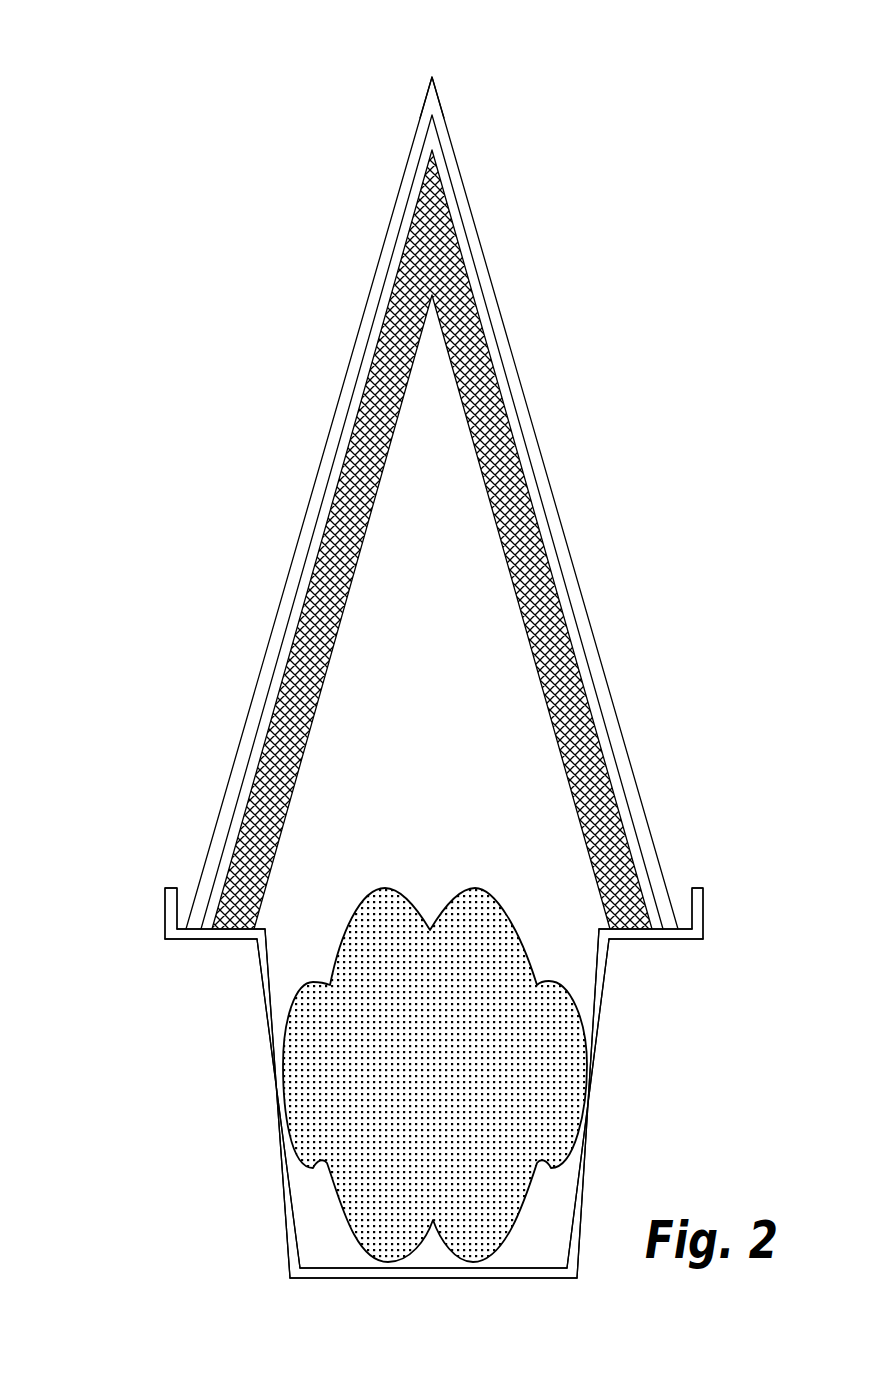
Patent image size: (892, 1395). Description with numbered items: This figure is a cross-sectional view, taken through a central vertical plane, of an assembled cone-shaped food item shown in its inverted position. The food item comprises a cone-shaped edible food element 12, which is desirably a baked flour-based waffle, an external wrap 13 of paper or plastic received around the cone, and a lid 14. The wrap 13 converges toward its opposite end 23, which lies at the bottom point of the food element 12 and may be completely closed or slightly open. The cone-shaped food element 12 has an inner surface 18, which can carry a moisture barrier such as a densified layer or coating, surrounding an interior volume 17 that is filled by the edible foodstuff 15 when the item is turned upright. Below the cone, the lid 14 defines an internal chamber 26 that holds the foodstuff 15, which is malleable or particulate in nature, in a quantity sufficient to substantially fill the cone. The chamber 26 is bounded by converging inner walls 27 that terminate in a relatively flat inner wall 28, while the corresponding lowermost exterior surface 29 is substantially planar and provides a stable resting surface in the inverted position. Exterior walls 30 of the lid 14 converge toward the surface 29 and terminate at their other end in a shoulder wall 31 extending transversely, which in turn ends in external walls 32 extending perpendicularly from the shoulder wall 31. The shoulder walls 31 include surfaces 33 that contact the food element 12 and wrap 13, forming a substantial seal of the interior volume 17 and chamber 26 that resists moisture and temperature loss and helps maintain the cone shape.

The cone-shaped edible food element 12 is at (305, 593).
The external wrap 13 is at (345, 370).
The lid 14 is at (578, 1278).
The edible foodstuff 15 is at (347, 928).
The interior volume 17 is at (415, 767).
The inner surface 18 is at (545, 688).
The opposite end 23 is at (431, 77).
The internal chamber 26 is at (538, 1238).
The converging inner walls 27 is at (590, 962).
The flat inner wall 28 is at (308, 1267).
The lowermost exterior surface 29 is at (428, 1278).
The exterior walls 30 is at (277, 1173).
The shoulder wall 31 is at (212, 940).
The external walls 32 is at (165, 923).
The surfaces 33 is at (217, 928).